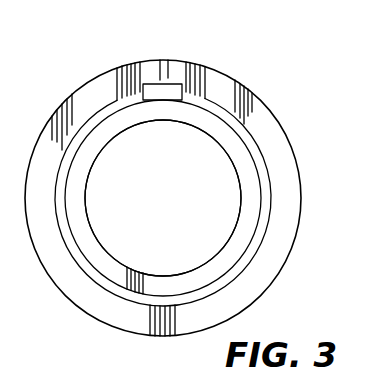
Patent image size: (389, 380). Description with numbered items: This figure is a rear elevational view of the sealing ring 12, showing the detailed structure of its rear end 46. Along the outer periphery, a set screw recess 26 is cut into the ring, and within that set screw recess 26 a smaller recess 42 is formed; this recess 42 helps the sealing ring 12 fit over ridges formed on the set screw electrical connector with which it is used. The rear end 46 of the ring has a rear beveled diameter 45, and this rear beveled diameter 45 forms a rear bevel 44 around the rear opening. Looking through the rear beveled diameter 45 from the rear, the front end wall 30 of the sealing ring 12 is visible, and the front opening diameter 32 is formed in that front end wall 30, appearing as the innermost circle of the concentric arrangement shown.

The sealing ring 12 is at (280, 92).
The set screw recess 26 is at (186, 72).
The recess 42 is at (154, 89).
The rear end 46 is at (276, 142).
The rear bevel 44 is at (267, 198).
The rear beveled diameter 45 is at (264, 243).
The front end wall 30 is at (93, 143).
The front opening diameter 32 is at (217, 137).